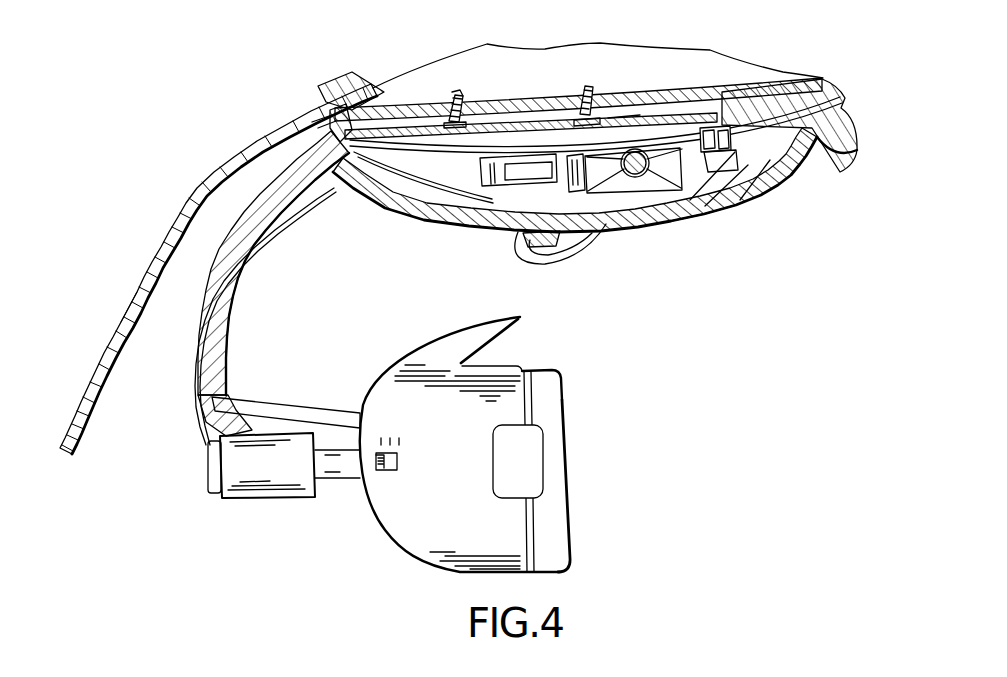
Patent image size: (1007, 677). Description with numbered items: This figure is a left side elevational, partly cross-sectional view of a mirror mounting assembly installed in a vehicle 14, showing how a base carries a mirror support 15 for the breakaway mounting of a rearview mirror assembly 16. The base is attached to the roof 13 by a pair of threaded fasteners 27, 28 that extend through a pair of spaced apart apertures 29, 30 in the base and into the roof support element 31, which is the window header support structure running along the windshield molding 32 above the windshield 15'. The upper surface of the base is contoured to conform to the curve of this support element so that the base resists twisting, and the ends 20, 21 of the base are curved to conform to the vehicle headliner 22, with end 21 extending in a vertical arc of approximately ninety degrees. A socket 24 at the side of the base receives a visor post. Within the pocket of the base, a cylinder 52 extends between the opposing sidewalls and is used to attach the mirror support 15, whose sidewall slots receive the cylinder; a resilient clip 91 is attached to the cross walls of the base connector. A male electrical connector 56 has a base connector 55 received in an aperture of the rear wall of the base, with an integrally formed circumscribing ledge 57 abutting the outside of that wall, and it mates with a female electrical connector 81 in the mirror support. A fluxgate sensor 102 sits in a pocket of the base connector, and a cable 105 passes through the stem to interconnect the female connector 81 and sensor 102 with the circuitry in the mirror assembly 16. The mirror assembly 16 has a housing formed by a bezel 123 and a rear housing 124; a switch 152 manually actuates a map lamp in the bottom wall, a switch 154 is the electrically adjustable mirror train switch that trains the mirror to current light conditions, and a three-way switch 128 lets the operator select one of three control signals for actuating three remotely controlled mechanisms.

The roof 13 is at (773, 83).
The vehicle 14 is at (182, 163).
The mirror support 15 is at (279, 283).
The windshield 15' is at (120, 274).
The rearview mirror assembly 16 is at (569, 398).
The end 20 is at (783, 181).
The end 21 is at (318, 132).
The vehicle headliner 22 is at (826, 118).
The socket 24 is at (536, 262).
The threaded fastener 27 is at (456, 106).
The threaded fastener 28 is at (590, 88).
The aperture 29 is at (466, 104).
The aperture 30 is at (567, 92).
The roof support element 31 is at (660, 92).
The windshield molding 32 is at (377, 88).
The cylinder 52 is at (627, 206).
The base connector 55 is at (698, 181).
The male electrical connector 56 is at (753, 191).
The circumscribing ledge 57 is at (712, 181).
The female electrical connector 81 is at (657, 200).
The resilient clip 91 is at (632, 181).
The fluxgate sensor 102 is at (470, 231).
The cable 105 is at (191, 348).
The bezel 123 is at (559, 523).
The rear housing 124 is at (400, 530).
The three-way switch 128 is at (380, 468).
The switch 152 is at (545, 458).
The switch 154 is at (520, 364).